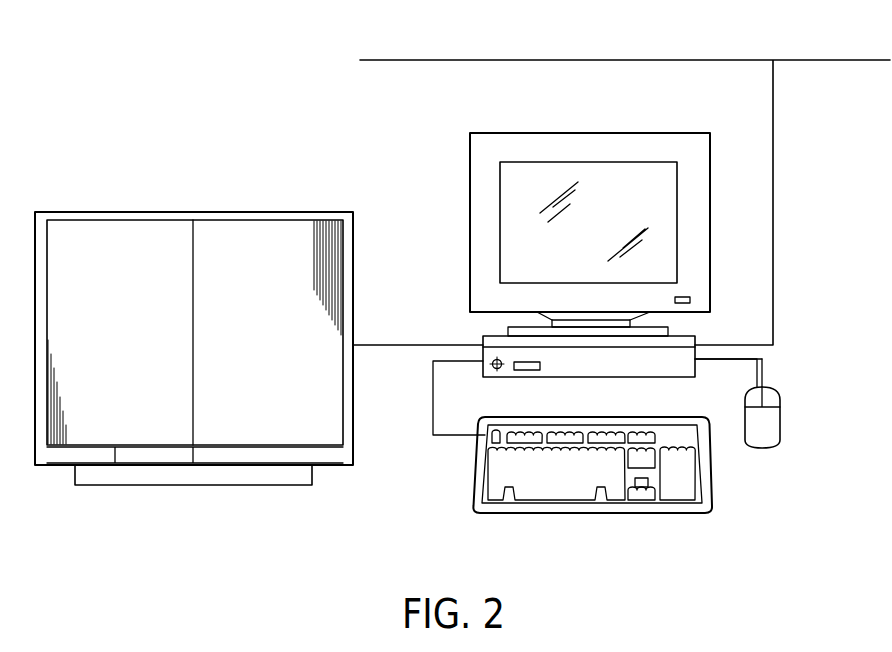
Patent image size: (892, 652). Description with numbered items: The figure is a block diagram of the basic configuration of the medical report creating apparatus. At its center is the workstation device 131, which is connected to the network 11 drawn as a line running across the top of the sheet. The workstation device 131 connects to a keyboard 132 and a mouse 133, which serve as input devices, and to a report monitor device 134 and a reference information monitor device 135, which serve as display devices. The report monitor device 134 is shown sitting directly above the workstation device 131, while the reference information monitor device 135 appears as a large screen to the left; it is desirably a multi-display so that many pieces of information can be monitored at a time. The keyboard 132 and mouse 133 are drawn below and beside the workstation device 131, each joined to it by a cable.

The network 11 is at (686, 60).
The workstation device 131 is at (697, 336).
The keyboard 132 is at (575, 515).
The mouse 133 is at (781, 415).
The report monitor device 134 is at (632, 132).
The reference information monitor device 135 is at (273, 210).